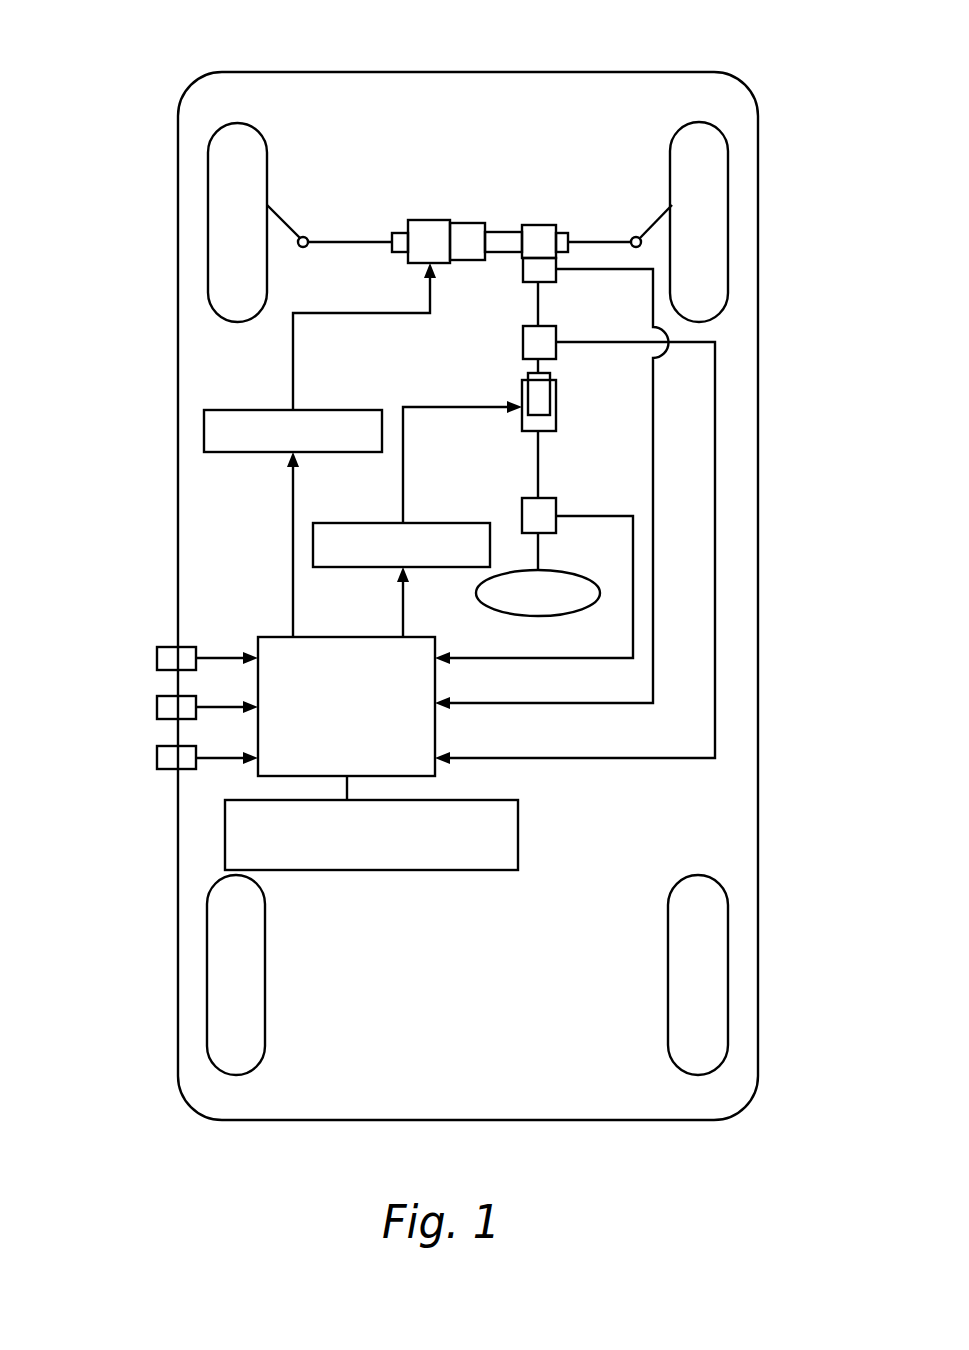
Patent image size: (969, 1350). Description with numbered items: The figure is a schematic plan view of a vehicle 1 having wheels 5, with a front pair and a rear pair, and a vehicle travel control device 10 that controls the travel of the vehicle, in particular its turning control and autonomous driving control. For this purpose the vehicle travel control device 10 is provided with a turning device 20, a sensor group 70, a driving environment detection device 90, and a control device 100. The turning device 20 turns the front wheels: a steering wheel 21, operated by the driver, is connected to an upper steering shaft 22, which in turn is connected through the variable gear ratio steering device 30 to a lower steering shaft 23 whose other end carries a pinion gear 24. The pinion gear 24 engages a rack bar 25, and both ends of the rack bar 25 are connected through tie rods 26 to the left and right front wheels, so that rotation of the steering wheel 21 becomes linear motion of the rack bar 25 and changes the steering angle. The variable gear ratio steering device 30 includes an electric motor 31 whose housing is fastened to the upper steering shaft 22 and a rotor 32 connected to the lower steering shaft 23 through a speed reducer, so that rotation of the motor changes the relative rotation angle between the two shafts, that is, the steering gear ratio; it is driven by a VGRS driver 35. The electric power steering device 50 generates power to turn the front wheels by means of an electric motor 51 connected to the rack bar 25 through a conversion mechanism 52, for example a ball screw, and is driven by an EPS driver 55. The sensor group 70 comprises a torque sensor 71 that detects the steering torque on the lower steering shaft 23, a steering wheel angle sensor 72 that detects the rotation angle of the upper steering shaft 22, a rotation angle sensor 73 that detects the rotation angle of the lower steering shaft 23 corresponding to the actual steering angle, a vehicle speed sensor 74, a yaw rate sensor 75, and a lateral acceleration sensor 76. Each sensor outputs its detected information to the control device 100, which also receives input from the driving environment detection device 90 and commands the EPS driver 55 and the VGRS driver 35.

The vehicle 1 is at (112, 318).
The wheels 5 is at (208, 222).
The vehicle travel control device 10 is at (463, 965).
The turning device 20 is at (531, 133).
The steering wheel 21 is at (478, 592).
The upper steering shaft 22 is at (540, 556).
The lower steering shaft 23 is at (542, 295).
The pinion gear 24 is at (538, 225).
The rack bar 25 is at (590, 242).
The tie rod 26 is at (284, 214).
The variable gear ratio steering device 30 is at (668, 416).
The electric motor 31 is at (556, 415).
The rotor 32 is at (552, 380).
The VGRS driver 35 is at (373, 523).
The electric power steering device 50 is at (427, 135).
The electric motor 51 is at (430, 220).
The conversion mechanism 52 is at (468, 223).
The EPS driver 55 is at (333, 410).
The sensor group 70 is at (377, 567).
The torque sensor 71 is at (523, 272).
The steering wheel angle sensor 72 is at (522, 516).
The rotation angle sensor 73 is at (523, 341).
The vehicle speed sensor 74 is at (157, 658).
The yaw rate sensor 75 is at (157, 707).
The lateral acceleration sensor 76 is at (157, 758).
The driving environment detection device 90 is at (518, 827).
The control device 100 is at (270, 637).